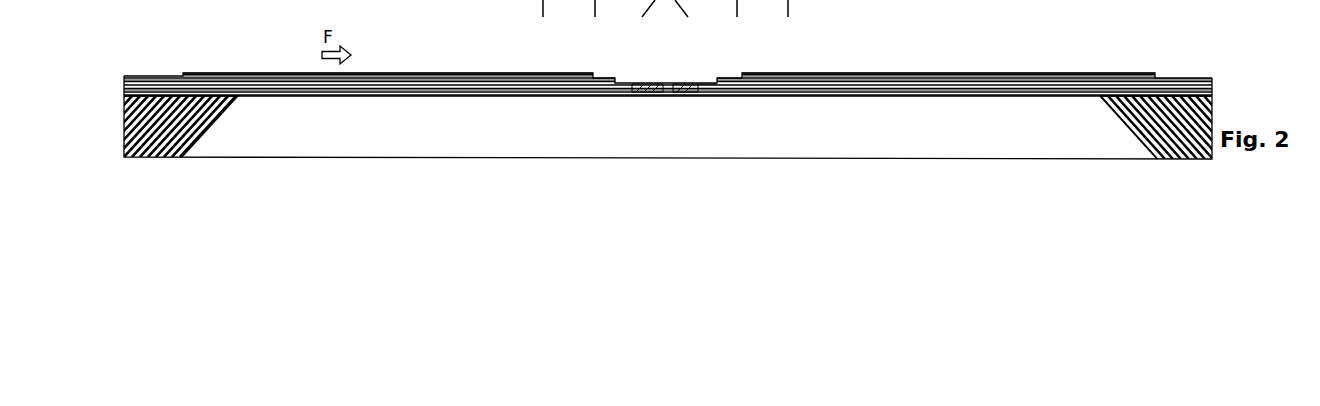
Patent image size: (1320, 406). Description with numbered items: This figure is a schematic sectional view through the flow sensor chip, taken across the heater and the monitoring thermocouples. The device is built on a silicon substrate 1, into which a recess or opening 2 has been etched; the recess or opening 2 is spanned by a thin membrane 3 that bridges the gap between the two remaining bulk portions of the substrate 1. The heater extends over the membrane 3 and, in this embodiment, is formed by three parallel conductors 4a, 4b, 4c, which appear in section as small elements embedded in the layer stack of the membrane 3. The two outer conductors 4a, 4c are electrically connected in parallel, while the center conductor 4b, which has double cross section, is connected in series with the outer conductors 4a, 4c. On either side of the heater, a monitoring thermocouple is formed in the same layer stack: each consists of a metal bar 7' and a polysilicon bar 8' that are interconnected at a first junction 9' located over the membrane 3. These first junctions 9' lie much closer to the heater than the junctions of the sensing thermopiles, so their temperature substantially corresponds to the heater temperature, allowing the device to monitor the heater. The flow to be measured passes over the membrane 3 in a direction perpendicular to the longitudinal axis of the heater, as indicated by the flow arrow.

The silicon substrate 1 is at (1177, 115).
The recess or opening 2 is at (780, 136).
The membrane 3 is at (1022, 57).
The outer conductor of heater 4a is at (627, 82).
The center conductor of heater 4b is at (665, 83).
The outer conductor of heater 4c is at (700, 83).
The metal bar 7' is at (669, 53).
The polysilicon bar 8' is at (669, 56).
The first junction 9' is at (664, 57).